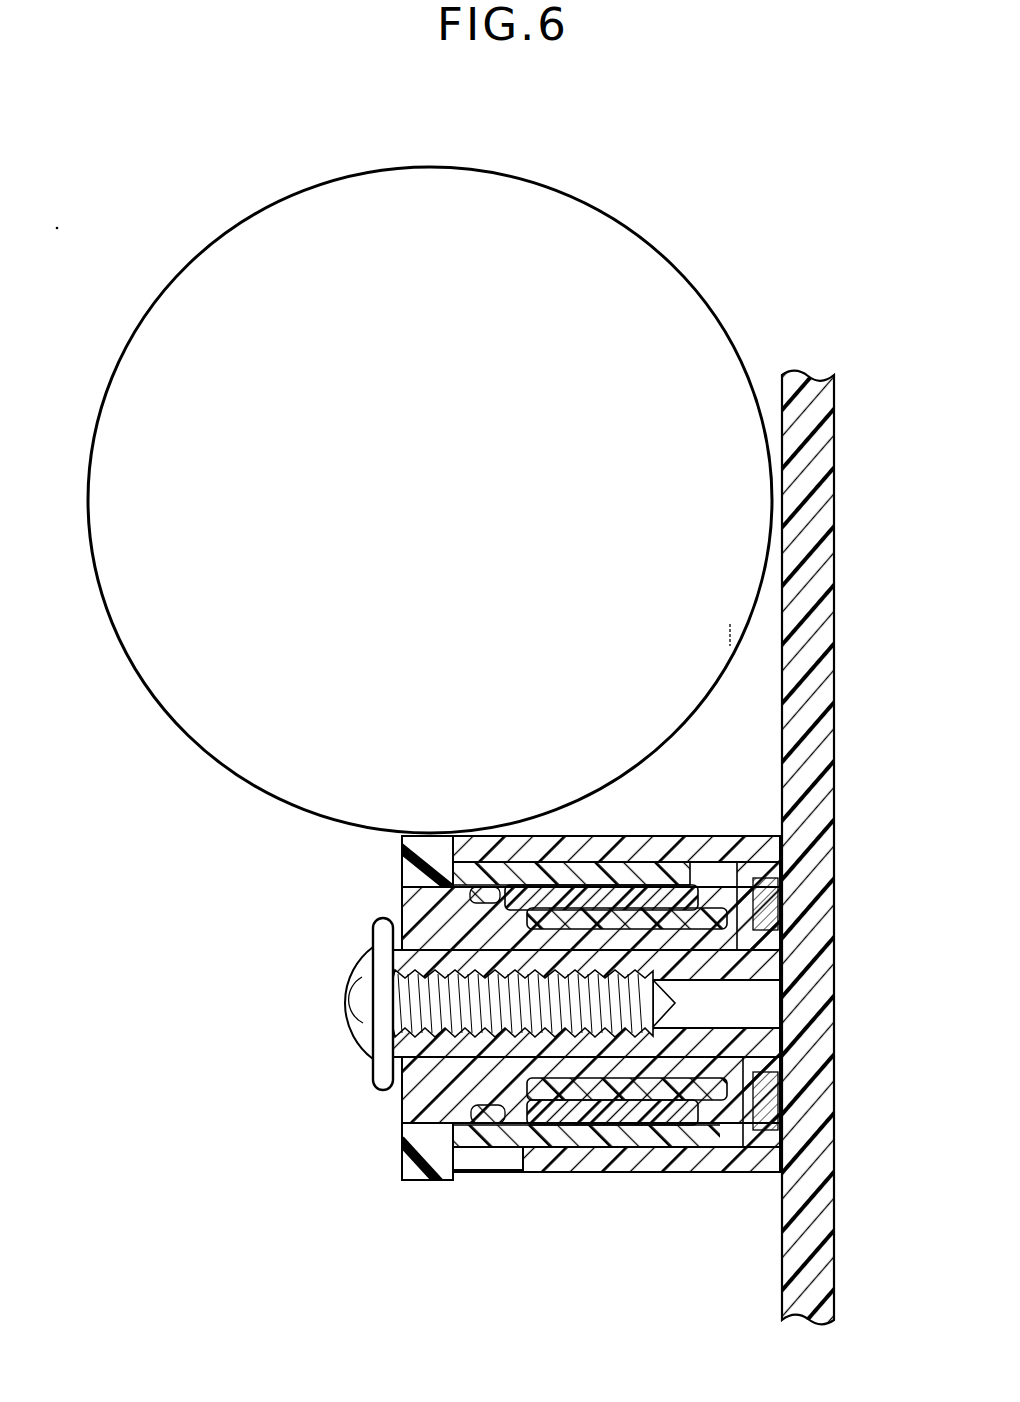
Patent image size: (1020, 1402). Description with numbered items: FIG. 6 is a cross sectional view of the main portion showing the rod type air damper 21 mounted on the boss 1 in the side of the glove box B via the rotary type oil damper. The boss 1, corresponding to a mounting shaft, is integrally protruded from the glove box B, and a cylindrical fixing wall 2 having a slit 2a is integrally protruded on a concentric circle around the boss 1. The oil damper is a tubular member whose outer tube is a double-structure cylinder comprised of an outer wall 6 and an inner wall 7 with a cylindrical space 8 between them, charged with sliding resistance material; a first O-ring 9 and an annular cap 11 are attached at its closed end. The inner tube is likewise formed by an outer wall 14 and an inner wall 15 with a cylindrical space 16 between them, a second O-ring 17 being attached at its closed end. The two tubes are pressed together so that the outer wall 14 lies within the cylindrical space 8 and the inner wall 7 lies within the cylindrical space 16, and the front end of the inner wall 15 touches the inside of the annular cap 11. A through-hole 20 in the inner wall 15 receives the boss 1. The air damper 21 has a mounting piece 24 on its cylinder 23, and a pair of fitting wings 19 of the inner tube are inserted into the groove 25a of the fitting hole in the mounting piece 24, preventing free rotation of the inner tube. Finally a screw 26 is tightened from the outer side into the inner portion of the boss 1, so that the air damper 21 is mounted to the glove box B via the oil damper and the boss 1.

The boss 1 is at (403, 1043).
The fixing wall 2 is at (591, 1002).
The slit 2a is at (465, 1175).
The outer wall 6 is at (515, 858).
The inner wall 7 is at (665, 860).
The cylindrical space 8 is at (690, 860).
The first O-ring 9 is at (740, 1170).
The annular cap 11 is at (790, 1095).
The outer wall 14 is at (555, 860).
The inner wall 15 is at (580, 1170).
The cylindrical space 16 is at (695, 1170).
The second O-ring 17 is at (498, 1172).
The fitting wings 19 is at (403, 893).
The through-hole 20 is at (630, 1170).
The rod type air damper 21 is at (430, 469).
The cylinder 23 is at (240, 258).
The mounting piece 24 is at (420, 1182).
The groove 25a is at (371, 1011).
The screw 26 is at (362, 977).
The glove box B is at (818, 415).